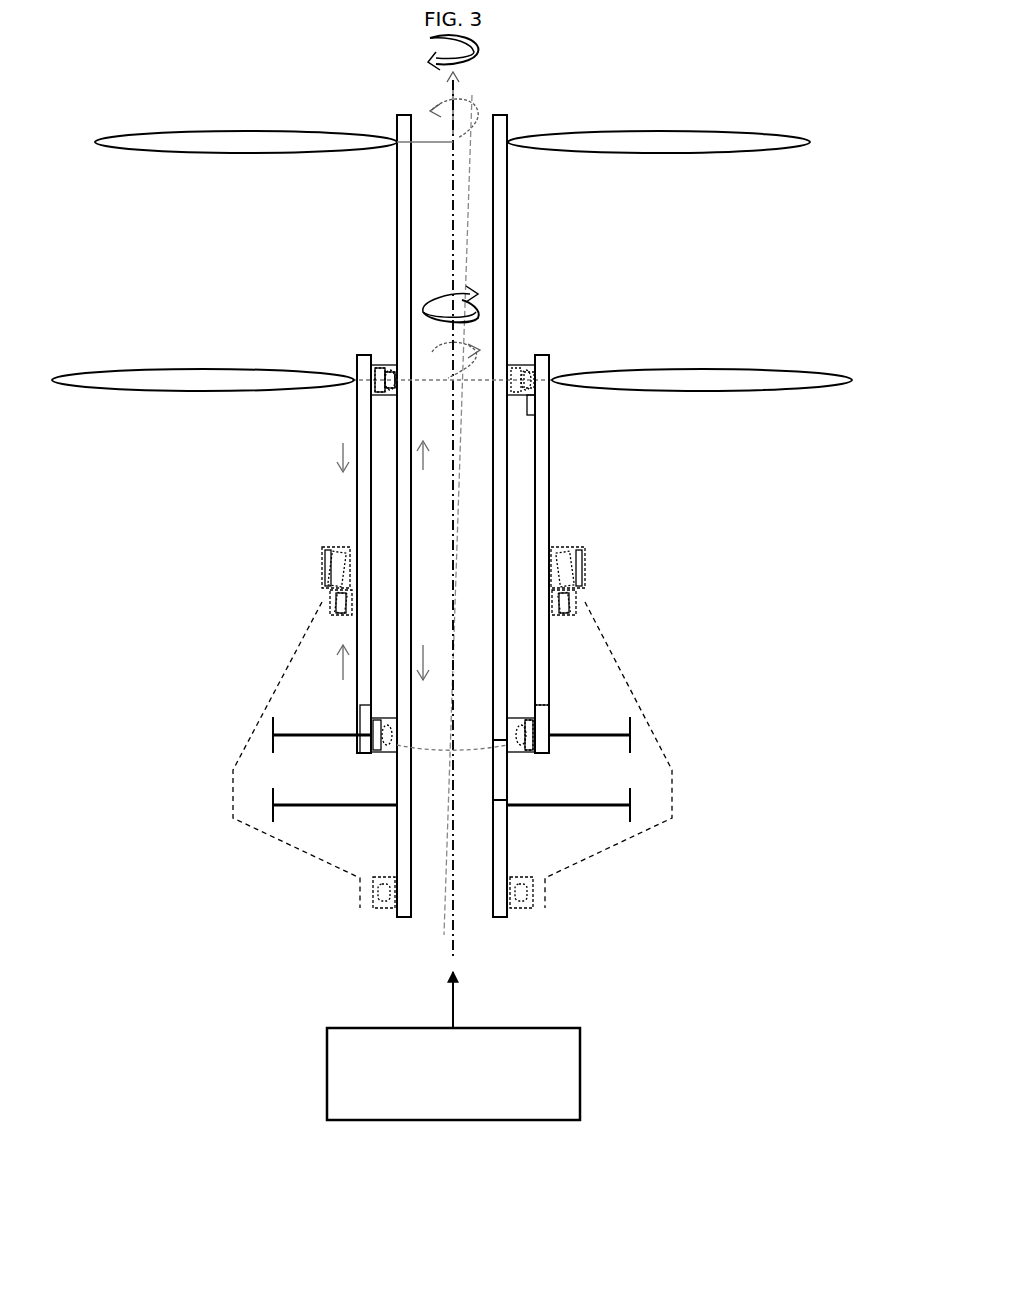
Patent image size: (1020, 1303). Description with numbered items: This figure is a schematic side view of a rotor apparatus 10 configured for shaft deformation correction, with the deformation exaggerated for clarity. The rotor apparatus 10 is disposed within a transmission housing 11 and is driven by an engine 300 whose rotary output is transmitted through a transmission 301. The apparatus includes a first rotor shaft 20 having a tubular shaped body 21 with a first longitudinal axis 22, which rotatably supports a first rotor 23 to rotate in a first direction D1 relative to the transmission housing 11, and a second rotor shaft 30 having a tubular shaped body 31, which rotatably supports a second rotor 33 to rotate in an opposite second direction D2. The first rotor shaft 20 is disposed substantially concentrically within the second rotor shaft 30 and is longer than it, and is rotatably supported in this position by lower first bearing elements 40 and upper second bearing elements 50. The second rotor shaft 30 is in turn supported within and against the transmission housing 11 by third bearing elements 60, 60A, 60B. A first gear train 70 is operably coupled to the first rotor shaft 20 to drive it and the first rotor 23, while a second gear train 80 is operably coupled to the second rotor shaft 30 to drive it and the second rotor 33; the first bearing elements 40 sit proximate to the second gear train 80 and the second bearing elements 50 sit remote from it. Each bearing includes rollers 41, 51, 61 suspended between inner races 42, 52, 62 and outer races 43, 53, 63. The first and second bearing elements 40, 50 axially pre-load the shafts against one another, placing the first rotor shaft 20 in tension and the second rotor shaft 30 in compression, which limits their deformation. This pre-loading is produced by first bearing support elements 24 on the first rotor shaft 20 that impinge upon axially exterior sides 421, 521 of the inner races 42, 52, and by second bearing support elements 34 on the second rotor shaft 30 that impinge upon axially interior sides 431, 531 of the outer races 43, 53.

The rotor apparatus 10 is at (260, 550).
The transmission housing 11 is at (262, 712).
The first rotor shaft 20 is at (512, 297).
The tubular shaped body 21 is at (398, 280).
The first longitudinal axis 22 is at (455, 607).
The first rotor 23 is at (222, 140).
The first bearing support elements 24 is at (518, 758).
The second rotor shaft 30 is at (413, 554).
The tubular shaped body 31 is at (362, 495).
The second rotor 33 is at (198, 384).
The second bearing support elements 34 is at (533, 408).
The first bearing elements 40 is at (497, 712).
The rollers 41 is at (378, 742).
The inner races 42 is at (397, 740).
The outer races 43 is at (372, 733).
The axially exterior sides 421 is at (520, 754).
The axially interior sides 431 is at (530, 720).
The second bearing elements 50 is at (469, 374).
The rollers 51 is at (526, 386).
The inner races 52 is at (513, 386).
The outer races 53 is at (534, 386).
The axially exterior sides 521 is at (389, 360).
The axially interior sides 531 is at (383, 400).
The third bearing elements 60 is at (471, 615).
The third bearing elements 60A is at (582, 610).
The third bearing elements 60B is at (538, 892).
The rollers 61 is at (335, 580).
The inner races 62 is at (348, 596).
The outer races 63 is at (328, 562).
The first gear train 70 is at (637, 808).
The second gear train 80 is at (630, 740).
The engine 300 is at (453, 1074).
The transmission 301 is at (325, 848).
The first direction D1 is at (432, 44).
The second direction D2 is at (423, 313).